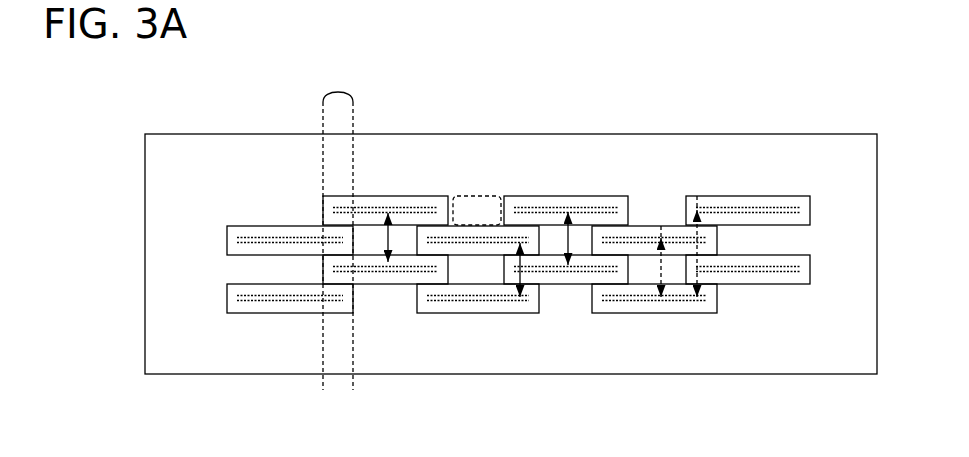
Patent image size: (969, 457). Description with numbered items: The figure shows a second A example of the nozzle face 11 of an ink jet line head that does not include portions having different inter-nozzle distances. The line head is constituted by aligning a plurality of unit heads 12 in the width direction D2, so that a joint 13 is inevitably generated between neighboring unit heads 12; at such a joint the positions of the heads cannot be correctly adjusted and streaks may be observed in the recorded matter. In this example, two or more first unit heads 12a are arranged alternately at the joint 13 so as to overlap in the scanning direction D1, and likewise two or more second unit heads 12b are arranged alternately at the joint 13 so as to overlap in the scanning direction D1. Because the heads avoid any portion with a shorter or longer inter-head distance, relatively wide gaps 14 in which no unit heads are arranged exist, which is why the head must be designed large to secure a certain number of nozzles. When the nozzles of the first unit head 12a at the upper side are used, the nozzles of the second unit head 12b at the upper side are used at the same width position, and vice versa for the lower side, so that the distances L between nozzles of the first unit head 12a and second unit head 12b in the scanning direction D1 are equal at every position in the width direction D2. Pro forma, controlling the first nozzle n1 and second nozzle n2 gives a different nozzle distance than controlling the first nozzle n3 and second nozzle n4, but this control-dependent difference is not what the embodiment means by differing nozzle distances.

The nozzle face 11 is at (233, 134).
The unit head 12 is at (771, 170).
The first unit head 12a is at (727, 196).
The second unit head 12b is at (812, 268).
The joint 13 is at (339, 227).
The gap 14 is at (479, 196).
The first nozzle n1 is at (697, 196).
The second nozzle n2 is at (697, 313).
The first nozzle n3 is at (661, 226).
The second nozzle n4 is at (660, 313).
The distance between nozzles L is at (388, 238).
The scanning direction D1 is at (57, 80).
The width direction D2 is at (57, 80).